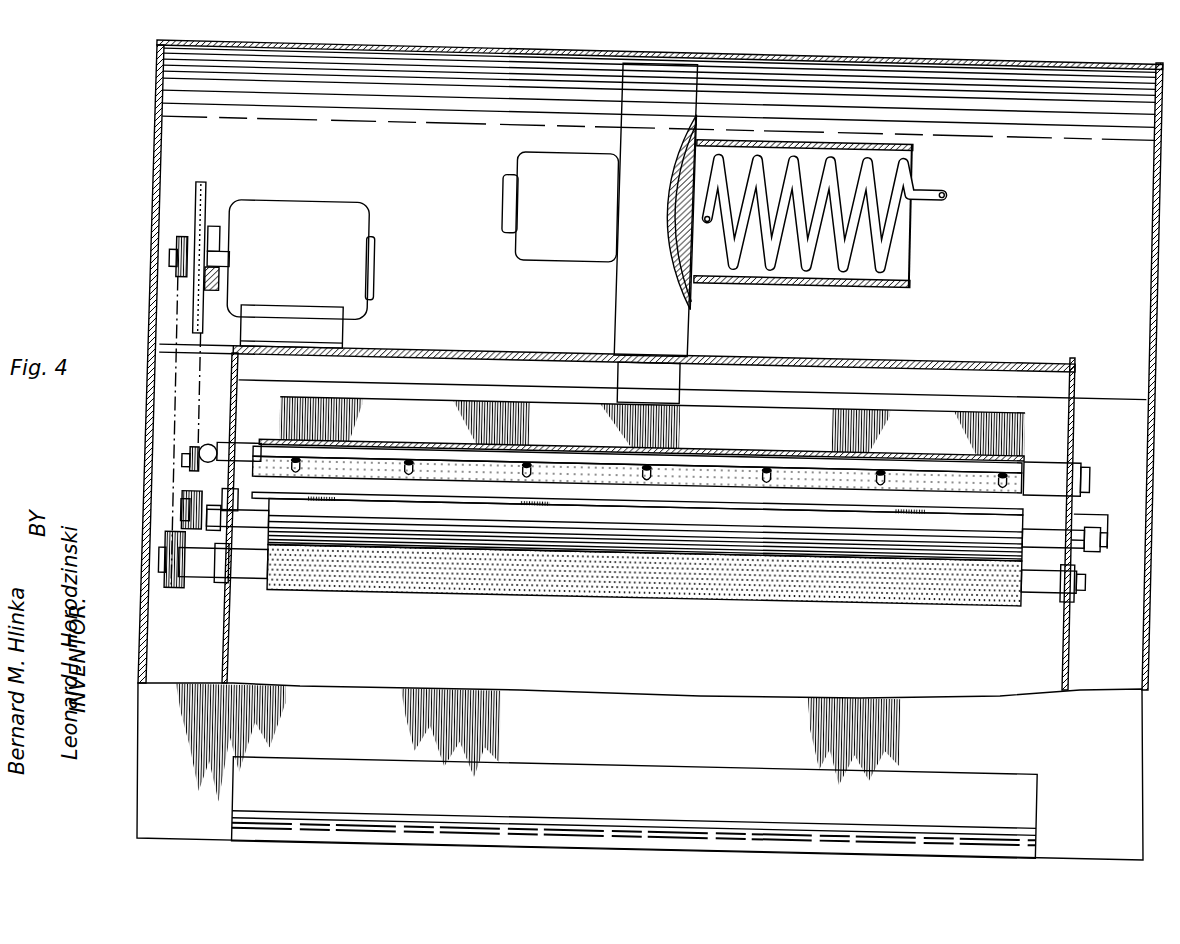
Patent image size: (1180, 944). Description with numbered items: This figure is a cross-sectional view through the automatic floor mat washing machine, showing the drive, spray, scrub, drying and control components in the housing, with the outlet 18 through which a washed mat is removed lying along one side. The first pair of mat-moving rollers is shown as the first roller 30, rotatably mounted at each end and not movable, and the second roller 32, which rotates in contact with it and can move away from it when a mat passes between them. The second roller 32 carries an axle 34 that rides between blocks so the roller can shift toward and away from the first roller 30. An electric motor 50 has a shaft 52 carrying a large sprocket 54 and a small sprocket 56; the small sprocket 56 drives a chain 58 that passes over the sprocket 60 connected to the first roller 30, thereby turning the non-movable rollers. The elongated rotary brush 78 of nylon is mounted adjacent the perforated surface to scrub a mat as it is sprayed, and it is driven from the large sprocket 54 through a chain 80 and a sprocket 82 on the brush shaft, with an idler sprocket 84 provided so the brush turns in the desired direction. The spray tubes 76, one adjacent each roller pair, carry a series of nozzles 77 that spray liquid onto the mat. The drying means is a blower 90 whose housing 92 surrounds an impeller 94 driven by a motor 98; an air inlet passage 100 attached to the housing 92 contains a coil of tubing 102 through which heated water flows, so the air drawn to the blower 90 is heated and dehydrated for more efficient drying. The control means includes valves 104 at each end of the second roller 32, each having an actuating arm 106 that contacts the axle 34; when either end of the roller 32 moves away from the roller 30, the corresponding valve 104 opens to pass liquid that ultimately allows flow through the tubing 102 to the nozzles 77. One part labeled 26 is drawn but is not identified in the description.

The outlet 18 is at (606, 757).
The base rail 26 is at (570, 827).
The first roller 30 is at (936, 588).
The second roller 32 is at (836, 543).
The axle 34 is at (279, 520).
The electric motor 50 is at (357, 217).
The motor shaft 52 is at (227, 243).
The large sprocket 54 is at (208, 182).
The small sprocket 56 is at (187, 238).
The chain 58 is at (184, 283).
The sprocket 60 is at (193, 576).
The spray tubes 76 is at (471, 455).
The nozzles 77 is at (658, 471).
The elongated rotary brush 78 is at (299, 401).
The chain 80 is at (201, 419).
The sprocket 82 is at (195, 455).
The idler sprocket 84 is at (192, 492).
The blower 90 is at (584, 143).
The blower housing 92 is at (683, 87).
The impeller 94 is at (698, 138).
The motor 98 is at (551, 240).
The air inlet passage 100 is at (882, 127).
The coil of tubing 102 is at (801, 146).
The valves 104 is at (216, 443).
The actuating arm 106 is at (240, 500).